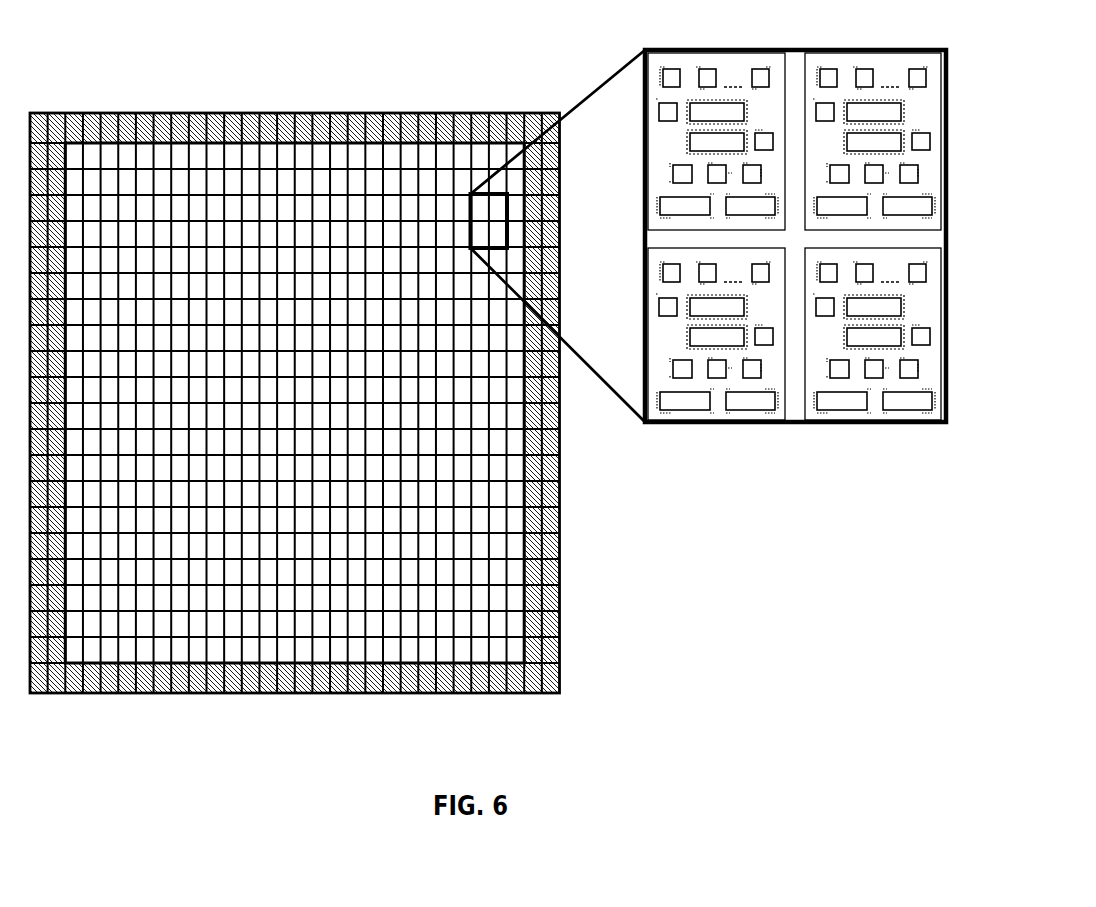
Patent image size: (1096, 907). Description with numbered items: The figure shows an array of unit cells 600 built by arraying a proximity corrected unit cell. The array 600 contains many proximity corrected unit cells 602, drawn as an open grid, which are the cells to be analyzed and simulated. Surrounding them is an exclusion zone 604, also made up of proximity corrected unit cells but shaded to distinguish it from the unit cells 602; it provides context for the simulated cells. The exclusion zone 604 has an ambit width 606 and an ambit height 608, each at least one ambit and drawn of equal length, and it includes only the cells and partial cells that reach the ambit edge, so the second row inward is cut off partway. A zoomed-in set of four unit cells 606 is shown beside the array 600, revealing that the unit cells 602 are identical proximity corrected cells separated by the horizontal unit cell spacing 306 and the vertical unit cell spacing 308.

The array of unit cells 600 is at (308, 64).
The proximity corrected unit cells 602 is at (513, 522).
The exclusion zone 604 is at (347, 403).
The ambit width 606 is at (709, 380).
The ambit height 608 is at (565, 692).
The horizontal unit cell spacing 306 is at (785, 427).
The vertical unit cell spacing 308 is at (640, 247).